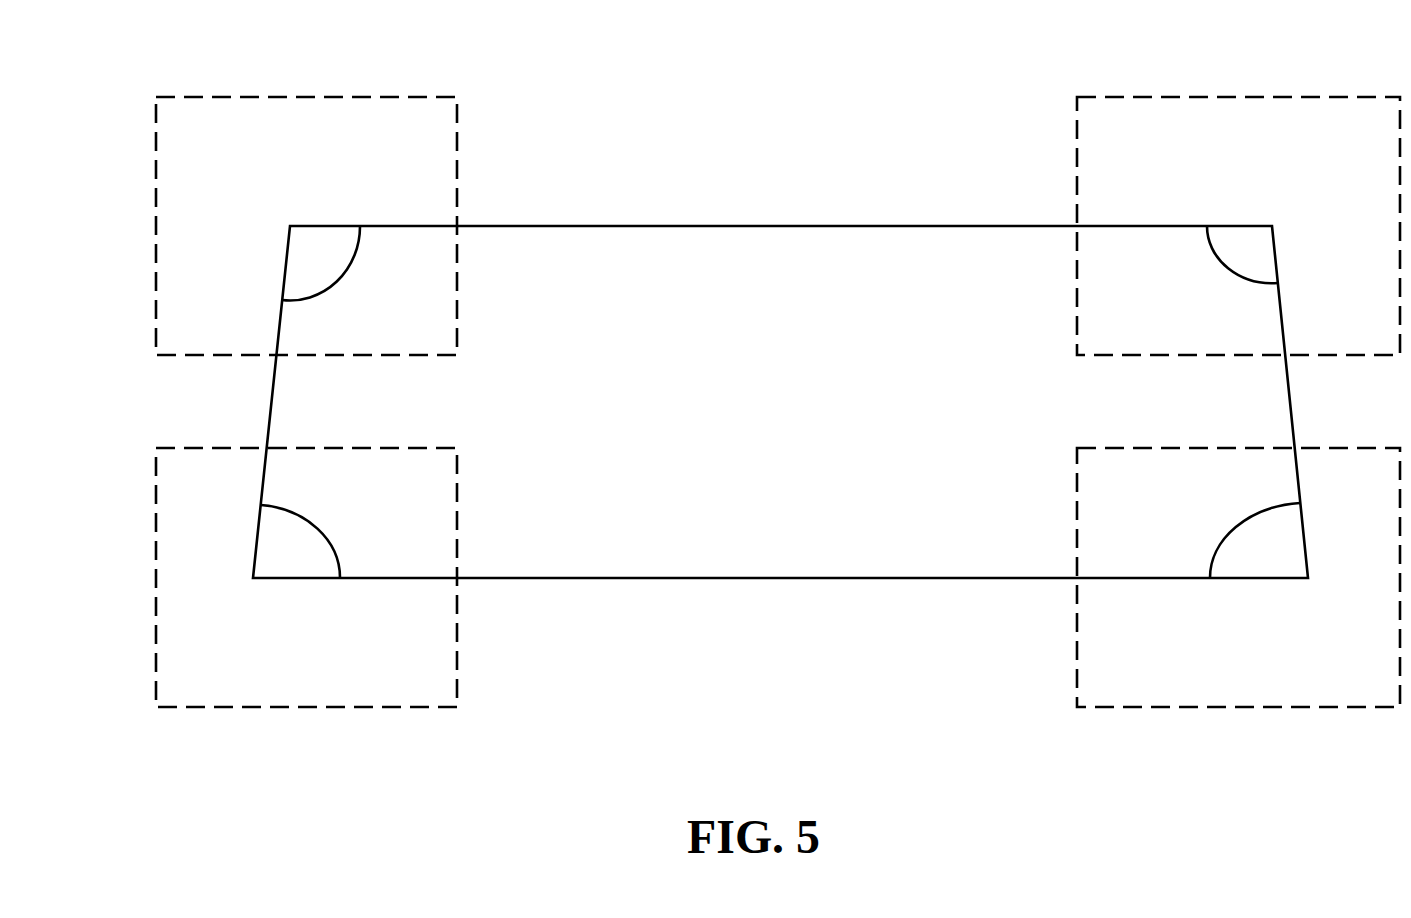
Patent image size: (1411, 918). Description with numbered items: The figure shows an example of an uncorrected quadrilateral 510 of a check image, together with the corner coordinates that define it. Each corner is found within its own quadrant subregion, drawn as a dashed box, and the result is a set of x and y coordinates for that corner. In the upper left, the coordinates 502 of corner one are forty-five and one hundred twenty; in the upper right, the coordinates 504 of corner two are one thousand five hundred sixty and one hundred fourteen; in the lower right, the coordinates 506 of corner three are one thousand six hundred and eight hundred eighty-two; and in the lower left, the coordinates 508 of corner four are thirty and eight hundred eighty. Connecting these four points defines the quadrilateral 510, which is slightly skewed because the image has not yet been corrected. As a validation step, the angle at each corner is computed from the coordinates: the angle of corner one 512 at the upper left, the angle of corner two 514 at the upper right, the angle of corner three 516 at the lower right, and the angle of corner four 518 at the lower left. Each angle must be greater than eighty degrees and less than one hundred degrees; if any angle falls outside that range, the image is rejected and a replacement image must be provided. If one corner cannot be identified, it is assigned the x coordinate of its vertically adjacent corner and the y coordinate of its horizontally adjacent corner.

The upper left coordinates (corner 1) 502 is at (208, 118).
The corner 2 coordinates 504 is at (1308, 107).
The corner 3 coordinates 506 is at (1253, 692).
The corner 4 coordinates 508 is at (283, 707).
The quadrilateral 510 is at (732, 578).
The angle of corner 1 512 is at (437, 290).
The angle of corner 2 514 is at (1095, 285).
The angle of corner 3 516 is at (1105, 498).
The angle of corner 4 518 is at (437, 503).